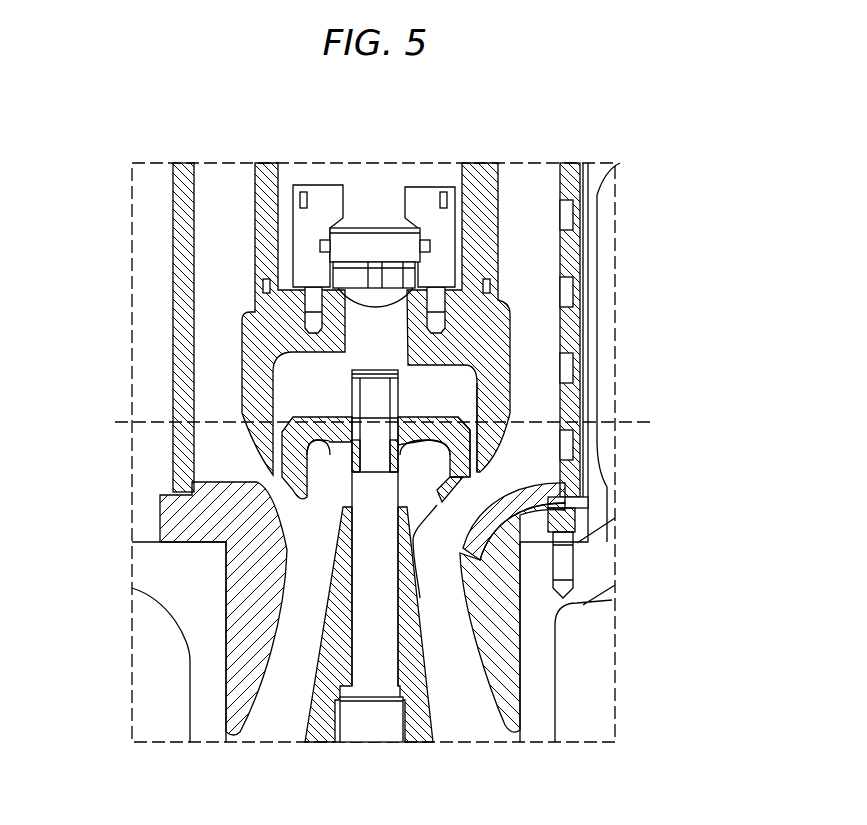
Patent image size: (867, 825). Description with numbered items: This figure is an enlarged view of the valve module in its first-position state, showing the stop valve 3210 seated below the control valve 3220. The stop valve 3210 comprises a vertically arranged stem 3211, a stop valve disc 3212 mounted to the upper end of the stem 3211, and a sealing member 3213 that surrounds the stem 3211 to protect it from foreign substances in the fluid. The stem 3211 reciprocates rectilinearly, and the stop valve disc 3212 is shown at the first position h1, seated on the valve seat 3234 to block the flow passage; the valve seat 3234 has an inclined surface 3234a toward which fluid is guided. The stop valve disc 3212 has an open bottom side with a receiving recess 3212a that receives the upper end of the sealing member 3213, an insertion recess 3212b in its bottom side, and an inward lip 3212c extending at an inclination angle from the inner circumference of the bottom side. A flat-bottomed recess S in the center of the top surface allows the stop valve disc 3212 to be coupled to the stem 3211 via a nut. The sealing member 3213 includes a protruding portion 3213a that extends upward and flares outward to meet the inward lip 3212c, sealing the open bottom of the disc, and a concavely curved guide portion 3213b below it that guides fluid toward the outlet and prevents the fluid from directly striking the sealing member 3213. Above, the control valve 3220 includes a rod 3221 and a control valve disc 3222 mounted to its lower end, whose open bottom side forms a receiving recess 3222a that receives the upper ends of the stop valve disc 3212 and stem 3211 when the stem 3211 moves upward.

The control valve 3220 is at (384, 289).
The rod 3221 is at (377, 170).
The control valve disc 3222 is at (493, 337).
The receiving recess 3222a is at (458, 403).
The flat-bottomed recess S is at (463, 376).
The insertion recess 3212b is at (325, 443).
The stop valve disc 3212 is at (435, 447).
The receiving recess 3212a is at (435, 472).
The inward lip 3212c is at (460, 498).
The stop valve 3210 is at (262, 481).
The stem 3211 is at (357, 635).
The sealing member 3213 is at (422, 657).
The protruding portion 3213a is at (422, 523).
The guide portion 3213b is at (410, 538).
The valve seat 3234 is at (243, 558).
The inclined surface 3234a is at (263, 497).
The first position h1 is at (402, 422).